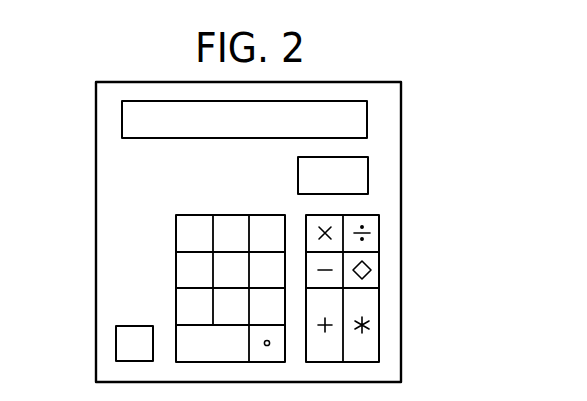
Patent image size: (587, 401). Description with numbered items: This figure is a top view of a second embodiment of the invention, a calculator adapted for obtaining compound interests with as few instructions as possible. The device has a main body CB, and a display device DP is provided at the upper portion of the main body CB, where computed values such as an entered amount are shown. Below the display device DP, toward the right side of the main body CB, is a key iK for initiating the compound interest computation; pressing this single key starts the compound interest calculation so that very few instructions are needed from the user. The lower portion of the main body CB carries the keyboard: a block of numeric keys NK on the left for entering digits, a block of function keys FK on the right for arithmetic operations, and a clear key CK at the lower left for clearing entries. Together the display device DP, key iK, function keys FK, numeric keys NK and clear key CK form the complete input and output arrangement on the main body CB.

The main body CB is at (401, 108).
The display device DP is at (327, 101).
The key for initiating the compound interest computation iK is at (368, 178).
The numeric keys NK is at (173, 213).
The function keys FK is at (410, 220).
The clear key CK is at (116, 340).